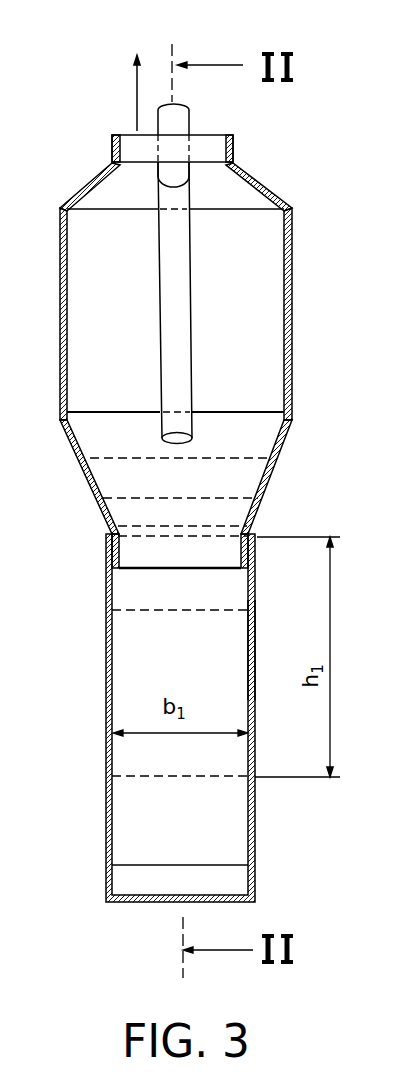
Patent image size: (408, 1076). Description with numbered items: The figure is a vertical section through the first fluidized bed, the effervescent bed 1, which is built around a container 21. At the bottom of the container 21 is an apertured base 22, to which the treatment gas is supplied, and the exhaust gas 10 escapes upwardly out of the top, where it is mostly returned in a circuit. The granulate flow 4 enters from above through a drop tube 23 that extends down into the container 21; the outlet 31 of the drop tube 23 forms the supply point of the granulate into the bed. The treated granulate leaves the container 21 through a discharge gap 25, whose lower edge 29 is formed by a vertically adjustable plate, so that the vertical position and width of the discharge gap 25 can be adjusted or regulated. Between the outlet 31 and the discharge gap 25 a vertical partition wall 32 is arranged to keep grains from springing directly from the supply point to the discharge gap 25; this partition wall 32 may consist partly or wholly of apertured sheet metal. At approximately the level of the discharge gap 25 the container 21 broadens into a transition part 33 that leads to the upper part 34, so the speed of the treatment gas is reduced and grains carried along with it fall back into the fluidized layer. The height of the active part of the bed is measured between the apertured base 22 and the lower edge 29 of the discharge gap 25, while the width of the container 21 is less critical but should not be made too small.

The effervescent bed 1 is at (258, 650).
The granulate flow 4 is at (165, 100).
The exhaust gas 10 is at (124, 93).
The container 21 is at (124, 630).
The apertured base 22 is at (177, 778).
The drop tube 23 is at (188, 296).
The discharge gap 25 is at (108, 531).
The lower edge 29 is at (137, 538).
The outlet 31 is at (184, 441).
The partition wall 32 is at (242, 412).
The transition part 33 is at (280, 468).
The upper part 34 is at (295, 236).